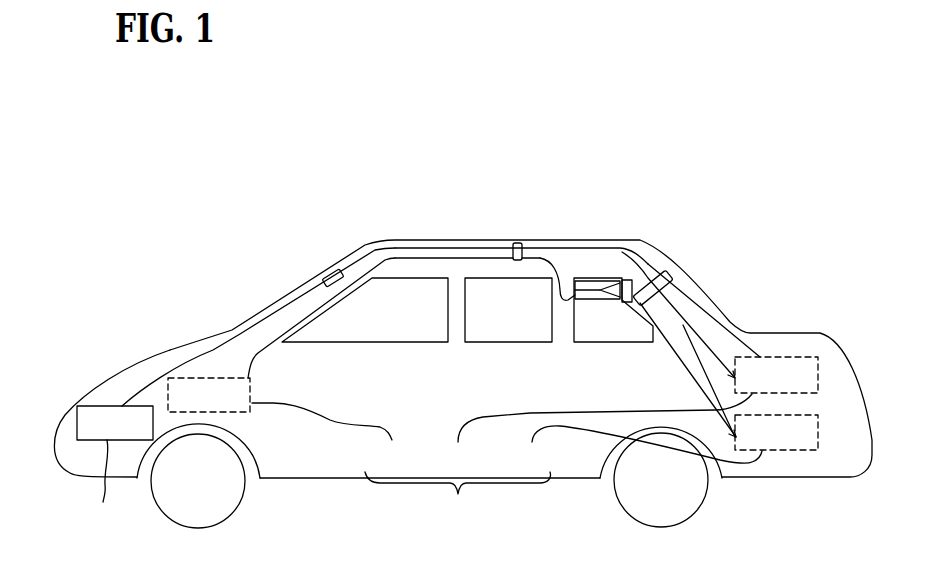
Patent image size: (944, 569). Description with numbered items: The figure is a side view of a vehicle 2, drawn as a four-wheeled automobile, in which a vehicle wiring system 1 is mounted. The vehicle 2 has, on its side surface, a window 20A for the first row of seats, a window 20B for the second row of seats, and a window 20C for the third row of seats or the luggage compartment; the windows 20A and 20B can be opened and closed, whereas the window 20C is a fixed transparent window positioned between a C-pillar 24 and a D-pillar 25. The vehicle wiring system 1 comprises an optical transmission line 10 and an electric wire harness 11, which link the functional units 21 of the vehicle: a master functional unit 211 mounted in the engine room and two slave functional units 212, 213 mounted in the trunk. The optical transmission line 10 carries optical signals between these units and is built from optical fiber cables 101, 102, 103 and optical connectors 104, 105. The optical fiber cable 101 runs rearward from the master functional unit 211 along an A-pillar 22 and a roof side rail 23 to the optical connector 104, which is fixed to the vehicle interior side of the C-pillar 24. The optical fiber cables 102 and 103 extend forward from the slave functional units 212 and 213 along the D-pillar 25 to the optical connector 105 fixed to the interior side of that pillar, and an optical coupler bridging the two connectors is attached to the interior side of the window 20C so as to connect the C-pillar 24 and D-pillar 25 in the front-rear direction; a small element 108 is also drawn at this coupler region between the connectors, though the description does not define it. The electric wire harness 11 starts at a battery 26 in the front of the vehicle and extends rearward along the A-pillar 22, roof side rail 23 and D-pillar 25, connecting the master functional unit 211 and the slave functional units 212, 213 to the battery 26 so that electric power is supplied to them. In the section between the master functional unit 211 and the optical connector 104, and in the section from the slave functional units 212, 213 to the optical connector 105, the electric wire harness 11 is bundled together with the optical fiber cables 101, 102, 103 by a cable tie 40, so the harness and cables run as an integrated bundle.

The vehicle wiring system 1 is at (447, 273).
The vehicle 2 is at (190, 321).
The optical transmission line 10 is at (303, 302).
The electric wire harness 11 is at (250, 317).
The window 20A is at (378, 343).
The window 20B is at (505, 343).
The window 20C is at (617, 343).
The functional units 21 is at (458, 497).
The master functional unit 211 is at (328, 435).
The slave functional unit 212 is at (600, 431).
The slave functional unit 213 is at (642, 447).
The A-pillar 22 is at (336, 268).
The roof side rail 23 is at (466, 241).
The C-pillar 24 is at (553, 315).
The D-pillar 25 is at (673, 274).
The battery 26 is at (104, 479).
The cable tie 40 is at (519, 242).
The optical fiber cable 101 is at (388, 258).
The optical fiber cable 102 is at (697, 306).
The optical fiber cable 103 is at (722, 410).
The optical connector 104 is at (571, 279).
The optical connector 105 is at (628, 279).
The device sensor element 108 is at (607, 282).